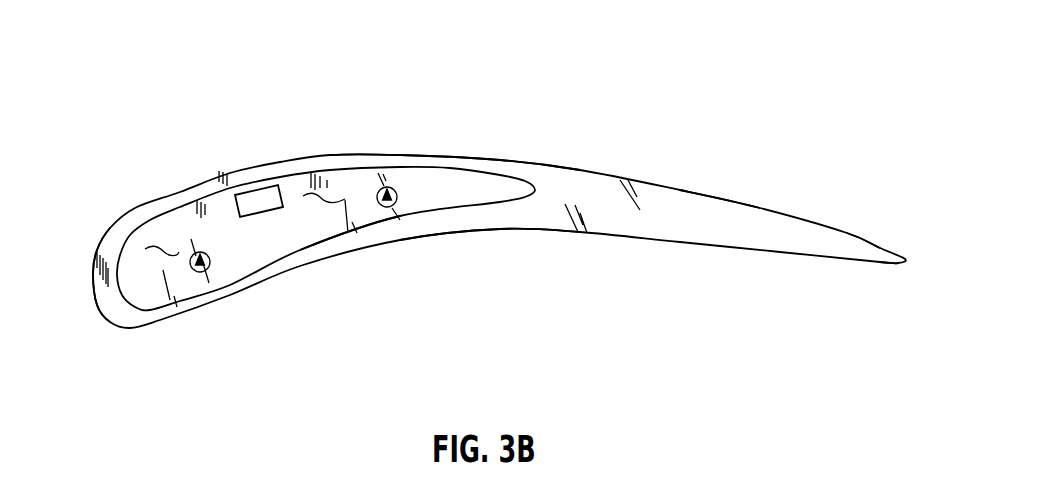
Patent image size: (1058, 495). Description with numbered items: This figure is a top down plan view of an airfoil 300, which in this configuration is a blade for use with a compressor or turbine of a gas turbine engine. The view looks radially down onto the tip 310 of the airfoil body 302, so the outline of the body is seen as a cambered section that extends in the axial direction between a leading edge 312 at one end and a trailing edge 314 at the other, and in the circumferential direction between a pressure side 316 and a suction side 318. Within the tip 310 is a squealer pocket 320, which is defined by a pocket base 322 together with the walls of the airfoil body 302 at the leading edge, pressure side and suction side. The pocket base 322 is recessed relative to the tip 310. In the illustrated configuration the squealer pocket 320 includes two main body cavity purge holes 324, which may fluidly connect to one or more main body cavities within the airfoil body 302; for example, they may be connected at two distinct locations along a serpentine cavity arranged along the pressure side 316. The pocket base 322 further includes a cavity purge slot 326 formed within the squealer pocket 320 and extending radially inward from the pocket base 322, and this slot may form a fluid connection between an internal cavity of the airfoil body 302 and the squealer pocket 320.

The airfoil 300 is at (150, 54).
The airfoil body 302 is at (764, 206).
The tip 310 is at (587, 197).
The leading edge 312 is at (97, 303).
The trailing edge 314 is at (907, 258).
The pressure side 316 is at (498, 252).
The suction side 318 is at (483, 147).
The squealer pocket 320 is at (322, 225).
The pocket base 322 is at (327, 194).
The main body cavity purge holes 324 is at (390, 208).
The cavity purge slot 326 is at (257, 196).